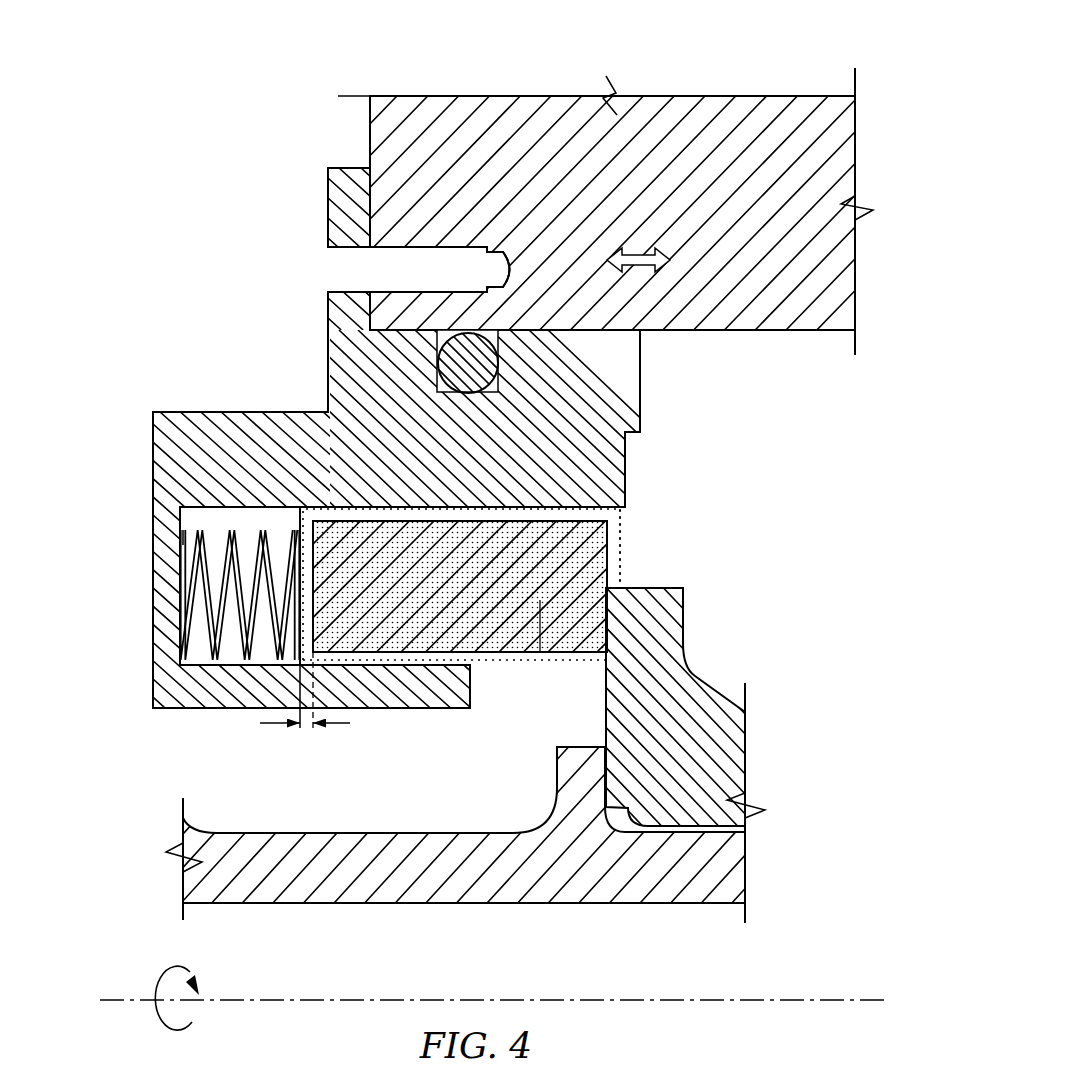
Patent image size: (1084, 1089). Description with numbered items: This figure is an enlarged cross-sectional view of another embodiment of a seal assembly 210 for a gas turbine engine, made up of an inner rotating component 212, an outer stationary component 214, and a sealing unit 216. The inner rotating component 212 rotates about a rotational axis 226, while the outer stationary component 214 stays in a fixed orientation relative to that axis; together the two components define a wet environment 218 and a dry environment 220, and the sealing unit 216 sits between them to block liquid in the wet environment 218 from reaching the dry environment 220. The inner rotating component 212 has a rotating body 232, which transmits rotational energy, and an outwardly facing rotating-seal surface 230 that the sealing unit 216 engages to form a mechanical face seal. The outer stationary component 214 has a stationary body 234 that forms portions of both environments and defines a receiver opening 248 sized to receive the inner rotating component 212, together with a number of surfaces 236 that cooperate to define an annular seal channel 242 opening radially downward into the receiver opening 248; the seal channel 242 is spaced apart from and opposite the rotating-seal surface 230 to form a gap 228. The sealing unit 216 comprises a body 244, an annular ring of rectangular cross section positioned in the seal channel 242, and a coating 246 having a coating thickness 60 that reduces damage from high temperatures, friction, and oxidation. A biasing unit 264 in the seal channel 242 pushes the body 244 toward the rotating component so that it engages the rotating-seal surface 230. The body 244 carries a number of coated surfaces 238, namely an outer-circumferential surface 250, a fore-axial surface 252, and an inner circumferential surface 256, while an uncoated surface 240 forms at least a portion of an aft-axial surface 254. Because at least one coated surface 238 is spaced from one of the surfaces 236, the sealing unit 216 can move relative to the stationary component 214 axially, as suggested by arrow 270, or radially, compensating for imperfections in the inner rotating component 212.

The seal assembly 210 is at (293, 140).
The inner rotating component 212 is at (512, 755).
The outer stationary component 214 is at (385, 420).
The sealing unit 216 is at (477, 690).
The wet environment 218 is at (293, 800).
The dry environment 220 is at (752, 414).
The rotational axis 226 is at (140, 996).
The gap 228 is at (660, 504).
The rotating-seal surface 230 is at (604, 717).
The rotating body 232 is at (740, 728).
The stationary body 234 is at (343, 312).
The surfaces 236 is at (203, 508).
The coated surfaces 238 is at (373, 657).
The uncoated surface 240 is at (607, 635).
The seal channel 242 is at (237, 638).
The body 244 is at (538, 623).
The coating 246 is at (613, 550).
The receiver opening 248 is at (177, 767).
The outer-circumferential surface 250 is at (293, 537).
The fore-axial surface 252 is at (235, 522).
The aft-axial surface 254 is at (607, 617).
The inner circumferential surface 256 is at (513, 655).
The biasing unit 264 is at (197, 537).
The arrow 270 is at (468, 510).
The coating thickness 60 is at (340, 726).